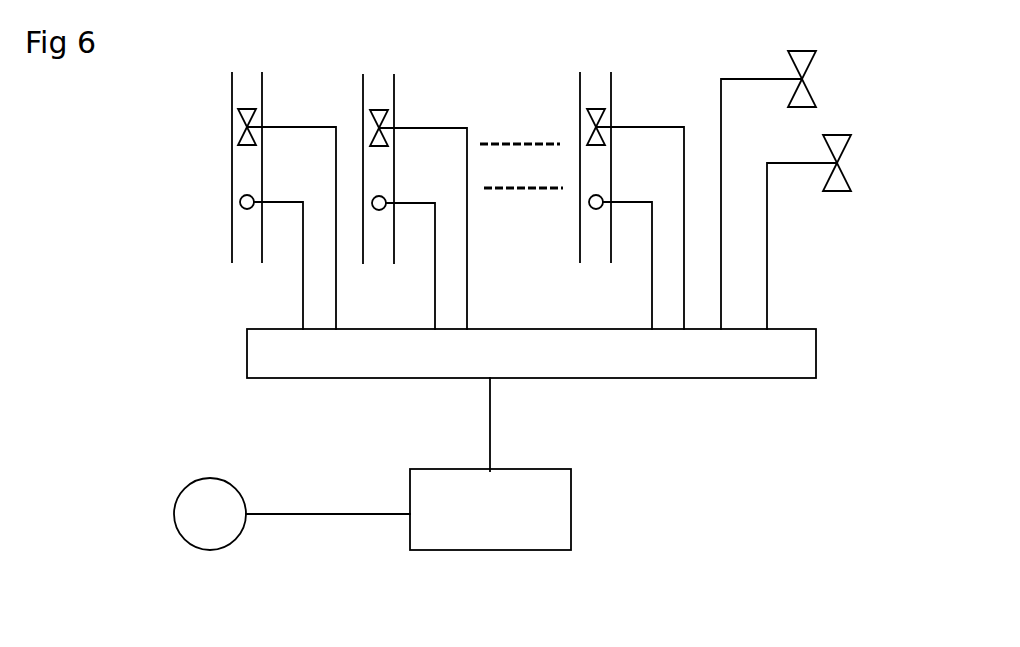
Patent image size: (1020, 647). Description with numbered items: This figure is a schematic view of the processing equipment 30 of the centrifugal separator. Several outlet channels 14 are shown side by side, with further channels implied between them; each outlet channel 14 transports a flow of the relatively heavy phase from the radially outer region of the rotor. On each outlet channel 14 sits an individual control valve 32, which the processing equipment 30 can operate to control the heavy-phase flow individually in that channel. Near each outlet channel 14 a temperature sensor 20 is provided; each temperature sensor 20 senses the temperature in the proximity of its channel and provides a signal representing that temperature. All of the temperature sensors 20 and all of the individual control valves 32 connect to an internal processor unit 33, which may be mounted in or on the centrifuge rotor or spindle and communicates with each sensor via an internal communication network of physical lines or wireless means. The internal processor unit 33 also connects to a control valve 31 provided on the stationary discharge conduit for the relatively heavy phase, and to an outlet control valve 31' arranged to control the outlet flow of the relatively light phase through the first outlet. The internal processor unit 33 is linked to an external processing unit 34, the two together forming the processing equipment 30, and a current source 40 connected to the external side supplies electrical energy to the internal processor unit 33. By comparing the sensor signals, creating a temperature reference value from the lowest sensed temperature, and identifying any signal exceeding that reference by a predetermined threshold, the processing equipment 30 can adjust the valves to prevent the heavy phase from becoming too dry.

The outlet channel 14 is at (242, 167).
The temperature sensor 20 is at (240, 203).
The processing equipment 30 is at (178, 315).
The control valve 31 is at (845, 66).
The outlet control valve 31' is at (874, 151).
The individual control valve 32 is at (244, 127).
The internal processor unit 33 is at (777, 366).
The external processing unit 34 is at (557, 525).
The current source 40 is at (180, 512).